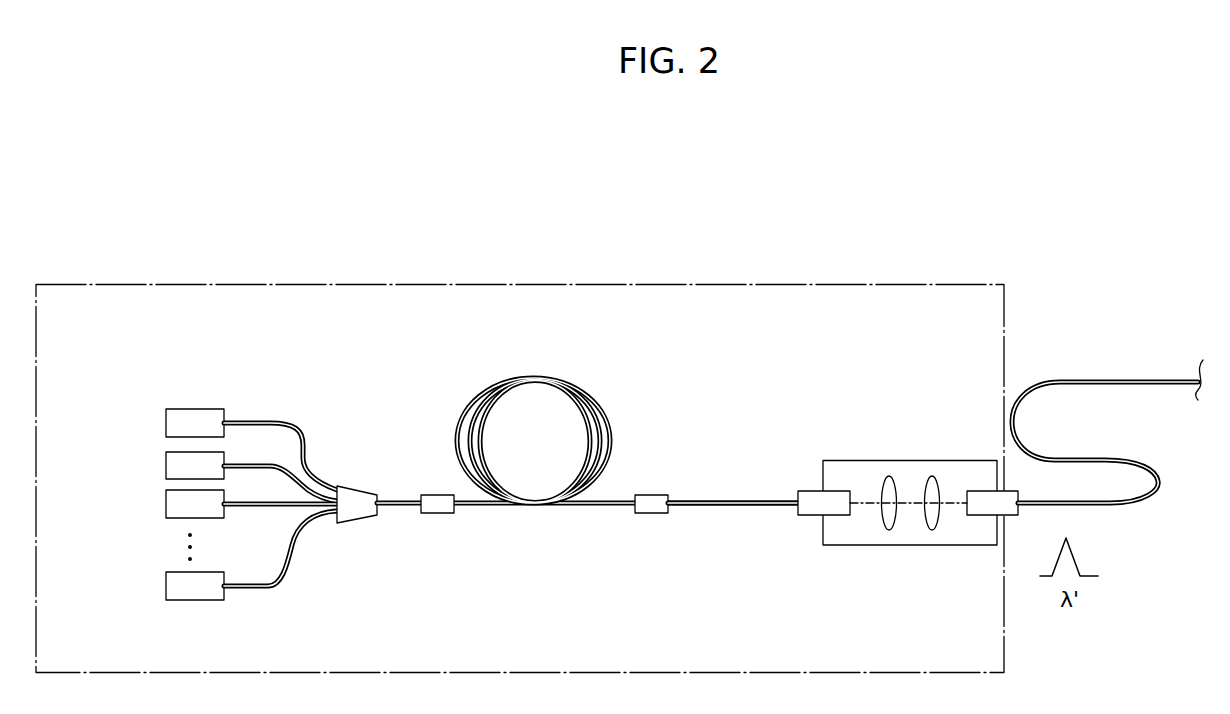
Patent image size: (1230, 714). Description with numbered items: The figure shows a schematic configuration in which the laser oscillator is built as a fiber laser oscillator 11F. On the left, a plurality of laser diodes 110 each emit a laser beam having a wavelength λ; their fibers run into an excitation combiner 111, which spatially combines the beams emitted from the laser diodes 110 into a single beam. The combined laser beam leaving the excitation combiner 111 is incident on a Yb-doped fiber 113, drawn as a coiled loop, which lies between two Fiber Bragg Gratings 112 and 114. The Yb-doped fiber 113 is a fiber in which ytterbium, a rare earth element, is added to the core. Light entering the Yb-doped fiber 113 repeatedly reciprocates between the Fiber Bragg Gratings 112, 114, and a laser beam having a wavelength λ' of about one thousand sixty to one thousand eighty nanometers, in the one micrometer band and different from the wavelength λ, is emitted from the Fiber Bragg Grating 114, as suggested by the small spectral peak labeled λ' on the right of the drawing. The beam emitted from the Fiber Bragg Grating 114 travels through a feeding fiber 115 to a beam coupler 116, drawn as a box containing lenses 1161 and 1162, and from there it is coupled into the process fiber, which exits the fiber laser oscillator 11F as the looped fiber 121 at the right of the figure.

The fiber laser oscillator 11F is at (725, 284).
The laser diodes 110 is at (200, 452).
The excitation combiner 111 is at (358, 486).
The Fiber Bragg Grating 112 is at (437, 515).
The Yb-doped fiber 113 is at (576, 383).
The Fiber Bragg Grating 114 is at (650, 515).
The feeding fiber 115 is at (748, 500).
The beam coupler 116 is at (908, 510).
The lens 1161 is at (889, 530).
The lens 1162 is at (932, 530).
The output optical fiber 121 is at (1093, 380).